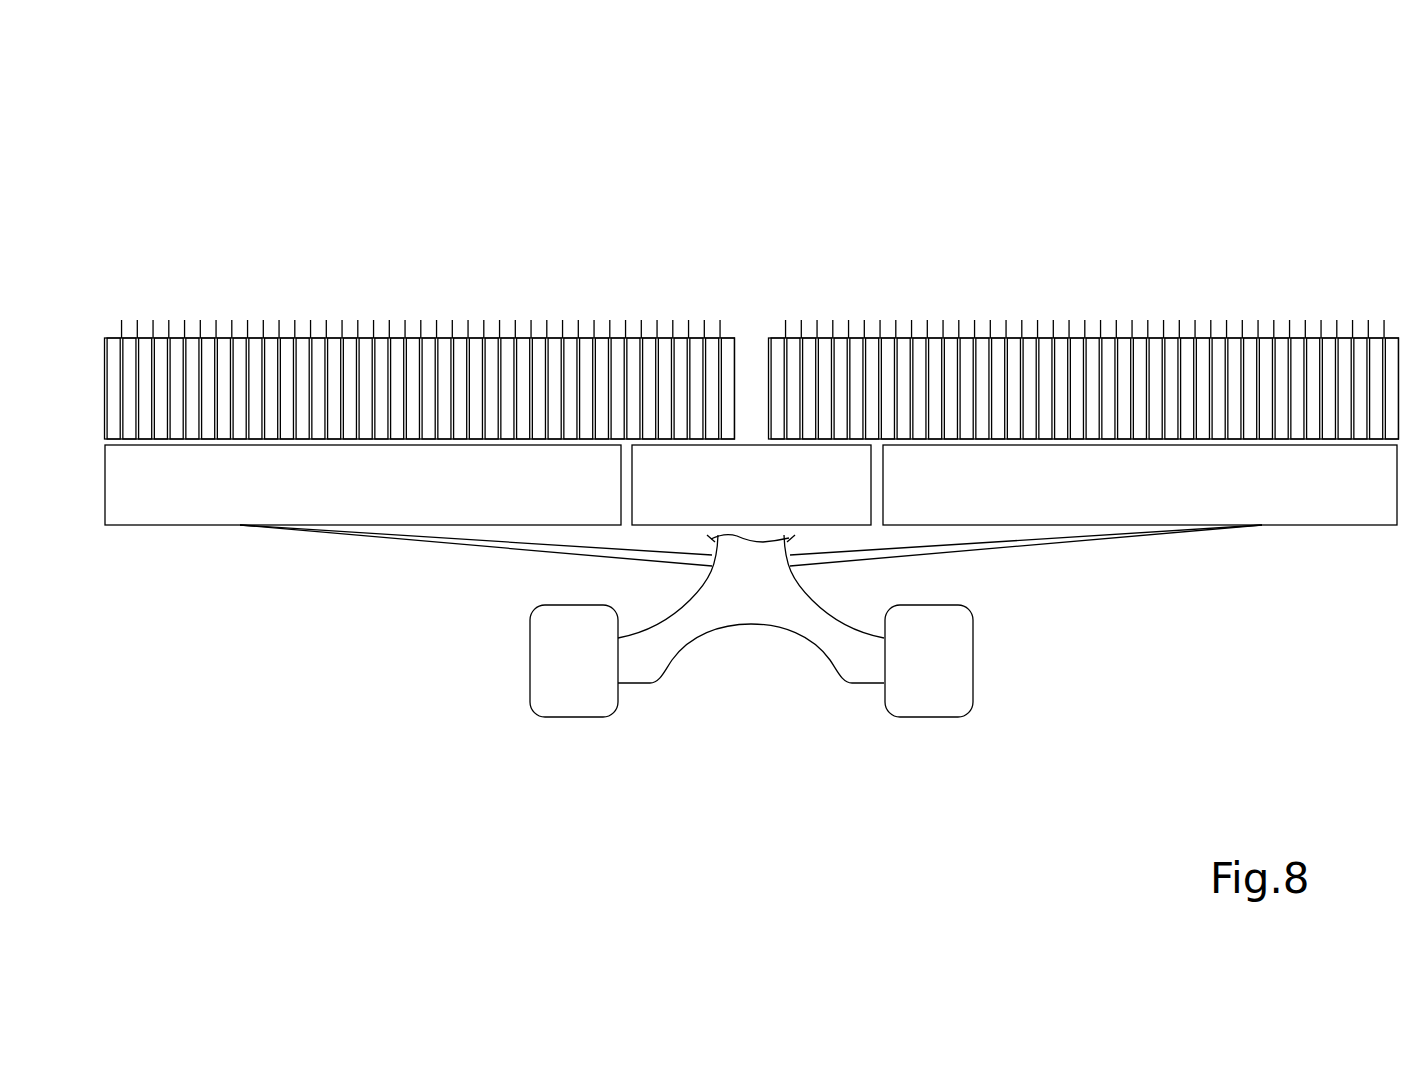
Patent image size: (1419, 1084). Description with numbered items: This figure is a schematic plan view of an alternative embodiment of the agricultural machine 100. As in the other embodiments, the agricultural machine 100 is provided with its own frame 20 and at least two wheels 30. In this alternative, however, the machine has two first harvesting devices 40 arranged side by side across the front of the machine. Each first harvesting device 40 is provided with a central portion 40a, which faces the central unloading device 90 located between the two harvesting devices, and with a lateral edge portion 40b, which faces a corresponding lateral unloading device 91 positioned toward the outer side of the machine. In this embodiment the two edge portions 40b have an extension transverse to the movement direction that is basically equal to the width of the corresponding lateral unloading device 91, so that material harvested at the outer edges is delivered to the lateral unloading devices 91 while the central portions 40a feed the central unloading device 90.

The agricultural machine 100 is at (1236, 203).
The first harvesting device 40 is at (405, 298).
The central portion 40a is at (680, 367).
The edge portion 40b is at (283, 362).
The lateral unloading device 91 is at (222, 490).
The central unloading device 90 is at (812, 490).
The frame 20 is at (689, 655).
The wheel 30 is at (550, 679).